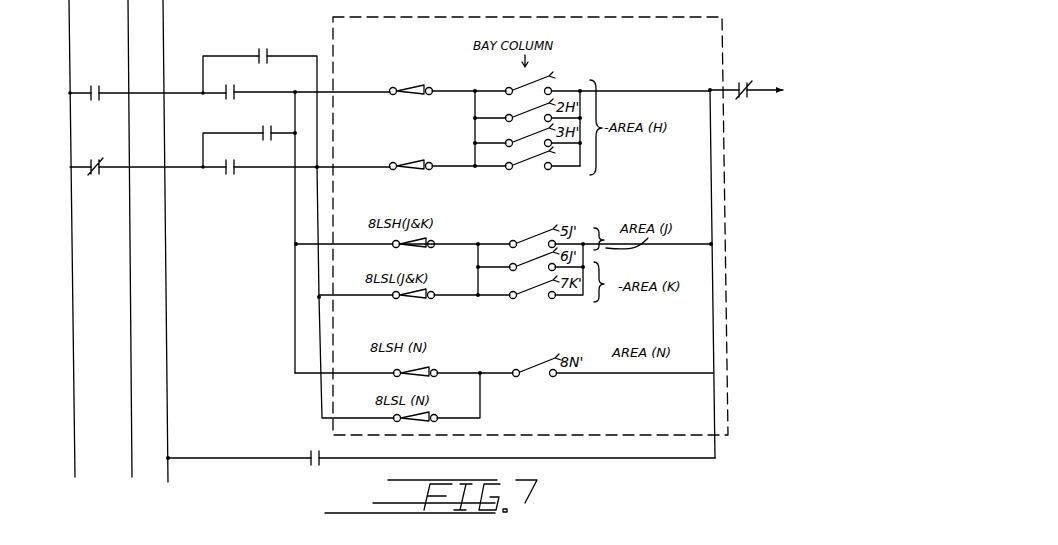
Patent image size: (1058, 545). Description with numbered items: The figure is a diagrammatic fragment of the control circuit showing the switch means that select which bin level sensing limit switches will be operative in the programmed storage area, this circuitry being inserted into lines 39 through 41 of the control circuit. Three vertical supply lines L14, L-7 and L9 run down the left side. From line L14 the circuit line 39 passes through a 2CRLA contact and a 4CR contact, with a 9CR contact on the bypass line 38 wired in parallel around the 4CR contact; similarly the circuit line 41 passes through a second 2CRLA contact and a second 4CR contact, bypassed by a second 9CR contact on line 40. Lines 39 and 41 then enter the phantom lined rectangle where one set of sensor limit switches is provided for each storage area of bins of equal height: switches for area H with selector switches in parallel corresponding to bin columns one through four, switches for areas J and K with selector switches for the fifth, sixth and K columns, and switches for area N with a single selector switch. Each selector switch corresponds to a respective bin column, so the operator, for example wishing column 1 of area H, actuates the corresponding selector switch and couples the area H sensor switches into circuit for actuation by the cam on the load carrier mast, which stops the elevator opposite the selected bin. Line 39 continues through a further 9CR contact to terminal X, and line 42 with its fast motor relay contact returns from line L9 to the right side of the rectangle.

The circuit line 38 is at (52, 56).
The circuit line 39 is at (52, 93).
The circuit line 40 is at (52, 139).
The circuit line 41 is at (52, 167).
The circuit line 42 is at (55, 463).
The bin column 1 is at (692, 12).
The terminal X is at (778, 86).
The relay contact 2CRLA is at (96, 84).
The relay contact 4CR is at (228, 85).
The relay contact 9CR is at (746, 81).
The bus line L14 is at (72, 292).
The bus line L9 is at (165, 341).
The bus line L-7 is at (128, 383).